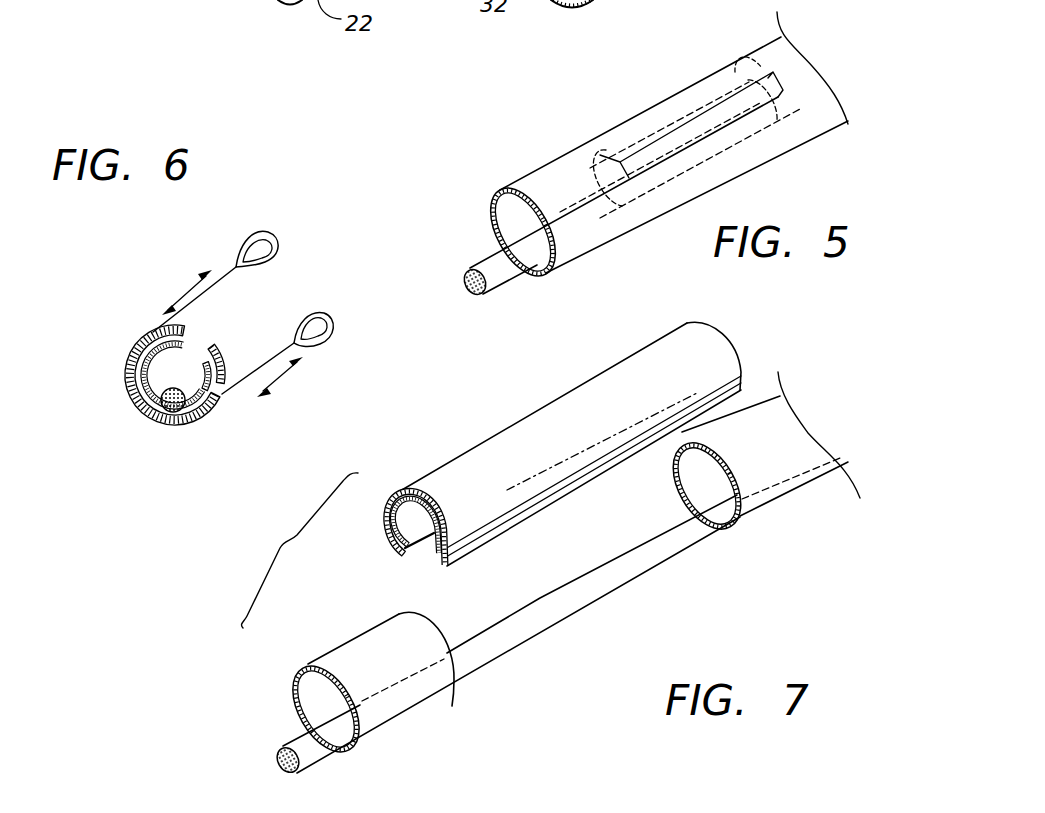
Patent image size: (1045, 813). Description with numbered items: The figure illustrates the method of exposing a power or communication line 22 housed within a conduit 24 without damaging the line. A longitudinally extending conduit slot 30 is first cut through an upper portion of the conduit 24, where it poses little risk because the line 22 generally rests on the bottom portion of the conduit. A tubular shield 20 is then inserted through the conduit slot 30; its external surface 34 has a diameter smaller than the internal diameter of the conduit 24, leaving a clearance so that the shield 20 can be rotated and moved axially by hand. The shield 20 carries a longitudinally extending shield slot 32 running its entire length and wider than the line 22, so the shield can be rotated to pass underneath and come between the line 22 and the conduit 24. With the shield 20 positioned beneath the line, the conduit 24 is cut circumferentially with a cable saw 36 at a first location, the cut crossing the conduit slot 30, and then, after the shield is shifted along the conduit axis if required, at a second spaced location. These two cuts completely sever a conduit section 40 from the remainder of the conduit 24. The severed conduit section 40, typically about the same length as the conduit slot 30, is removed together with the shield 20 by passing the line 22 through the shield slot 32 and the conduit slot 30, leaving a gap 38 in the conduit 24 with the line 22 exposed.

In FIG. 5, the shield 20 is at (760, 133).
In FIG. 6, the shield 20 is at (224, 390).
In FIG. 5, the power or communication line 22 is at (493, 272).
In FIG. 6, the power or communication line 22 is at (160, 395).
In FIG. 7, the power or communication line 22 is at (312, 752).
In FIG. 5, the conduit 24 is at (659, 142).
In FIG. 6, the conduit 24 is at (138, 348).
In FIG. 7, the conduit 24 is at (420, 675).
In FIG. 5, the conduit slot 30 is at (753, 92).
In FIG. 6, the conduit slot 30 is at (203, 341).
In FIG. 6, the shield slot 32 is at (203, 353).
In FIG. 6, the external surface of the shield 34 is at (140, 381).
In FIG. 7, the external surface of the shield 34 is at (430, 513).
In FIG. 5, the cable saw 36 is at (503, 228).
In FIG. 6, the cable saw 36 is at (257, 229).
In FIG. 7, the cable saw 36 is at (307, 684).
In FIG. 7, the gap 38 is at (696, 565).
In FIG. 7, the severed conduit section 40 is at (553, 423).